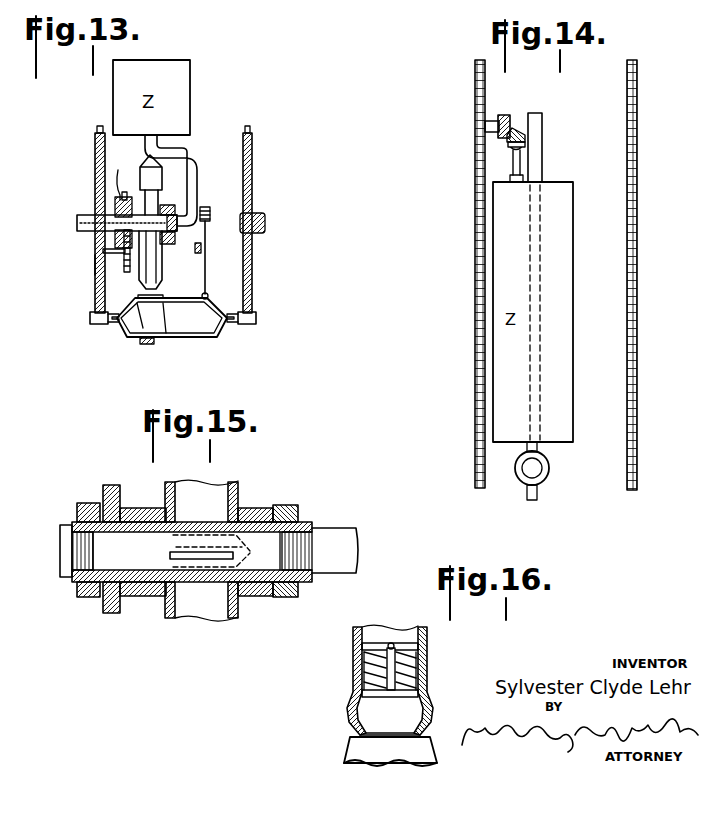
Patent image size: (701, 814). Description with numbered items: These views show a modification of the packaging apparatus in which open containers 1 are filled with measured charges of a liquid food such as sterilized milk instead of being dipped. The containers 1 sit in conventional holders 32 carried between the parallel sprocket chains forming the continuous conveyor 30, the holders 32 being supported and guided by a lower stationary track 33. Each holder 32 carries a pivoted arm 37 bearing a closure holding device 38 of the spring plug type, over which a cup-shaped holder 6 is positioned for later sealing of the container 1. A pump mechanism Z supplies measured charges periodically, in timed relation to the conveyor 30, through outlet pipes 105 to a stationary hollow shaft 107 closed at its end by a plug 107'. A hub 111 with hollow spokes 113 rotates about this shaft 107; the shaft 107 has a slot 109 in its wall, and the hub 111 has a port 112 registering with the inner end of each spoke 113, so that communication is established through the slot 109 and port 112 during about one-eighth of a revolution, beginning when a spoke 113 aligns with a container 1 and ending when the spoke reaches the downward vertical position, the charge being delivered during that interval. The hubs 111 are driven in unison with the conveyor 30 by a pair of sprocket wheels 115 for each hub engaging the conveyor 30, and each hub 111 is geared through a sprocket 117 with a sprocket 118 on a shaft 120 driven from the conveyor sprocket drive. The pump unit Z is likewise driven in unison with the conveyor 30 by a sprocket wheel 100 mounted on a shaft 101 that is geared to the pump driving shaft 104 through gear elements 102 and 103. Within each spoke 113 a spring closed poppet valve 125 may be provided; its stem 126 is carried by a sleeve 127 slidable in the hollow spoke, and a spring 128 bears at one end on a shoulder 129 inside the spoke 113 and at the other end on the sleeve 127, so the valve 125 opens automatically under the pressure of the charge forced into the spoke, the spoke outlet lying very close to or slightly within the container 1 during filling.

In FIG. 13, the container 1 is at (141, 320).
In FIG. 14, the container 1 is at (549, 464).
In FIG. 16, the container 1 is at (425, 752).
In FIG. 13, the cup-shaped holder 6 is at (198, 256).
In FIG. 13, the continuous conveyor 30 is at (92, 318).
In FIG. 14, the continuous conveyor 30 is at (475, 73).
In FIG. 13, the container holder 32 is at (178, 340).
In FIG. 13, the lower stationary track 33 is at (147, 346).
In FIG. 14, the lower stationary track 33 is at (541, 160).
In FIG. 13, the arm 37 is at (222, 225).
In FIG. 13, the closure holding device 38 is at (208, 262).
In FIG. 14, the sprocket wheel 100 is at (476, 117).
In FIG. 14, the shaft 101 is at (495, 118).
In FIG. 14, the gear element 102 is at (510, 120).
In FIG. 14, the gear element 103 is at (519, 140).
In FIG. 14, the driving shaft 104 is at (512, 158).
In FIG. 13, the outlet pipe 105 is at (190, 152).
In FIG. 15, the outlet pipe 105 is at (348, 552).
In FIG. 13, the hollow shaft 107 is at (106, 225).
In FIG. 15, the hollow shaft 107 is at (192, 521).
In FIG. 15, the plug 107' is at (59, 551).
In FIG. 13, the slot 109 is at (160, 258).
In FIG. 15, the slot 109 is at (170, 555).
In FIG. 13, the hub 111 is at (168, 200).
In FIG. 15, the hub 111 is at (250, 508).
In FIG. 15, the port 112 is at (226, 551).
In FIG. 13, the hollow spoke 113 is at (164, 179).
In FIG. 15, the hollow spoke 113 is at (238, 500).
In FIG. 16, the hollow spoke 113 is at (360, 647).
In FIG. 13, the sprocket wheel 115 is at (95, 158).
In FIG. 13, the sprocket 117 is at (80, 256).
In FIG. 13, the sprocket 118 is at (125, 276).
In FIG. 13, the shaft 120 is at (95, 267).
In FIG. 16, the poppet valve 125 is at (378, 697).
In FIG. 16, the stem 126 is at (360, 682).
In FIG. 16, the sleeve 127 is at (428, 637).
In FIG. 16, the spring 128 is at (420, 661).
In FIG. 16, the shoulder 129 is at (424, 681).